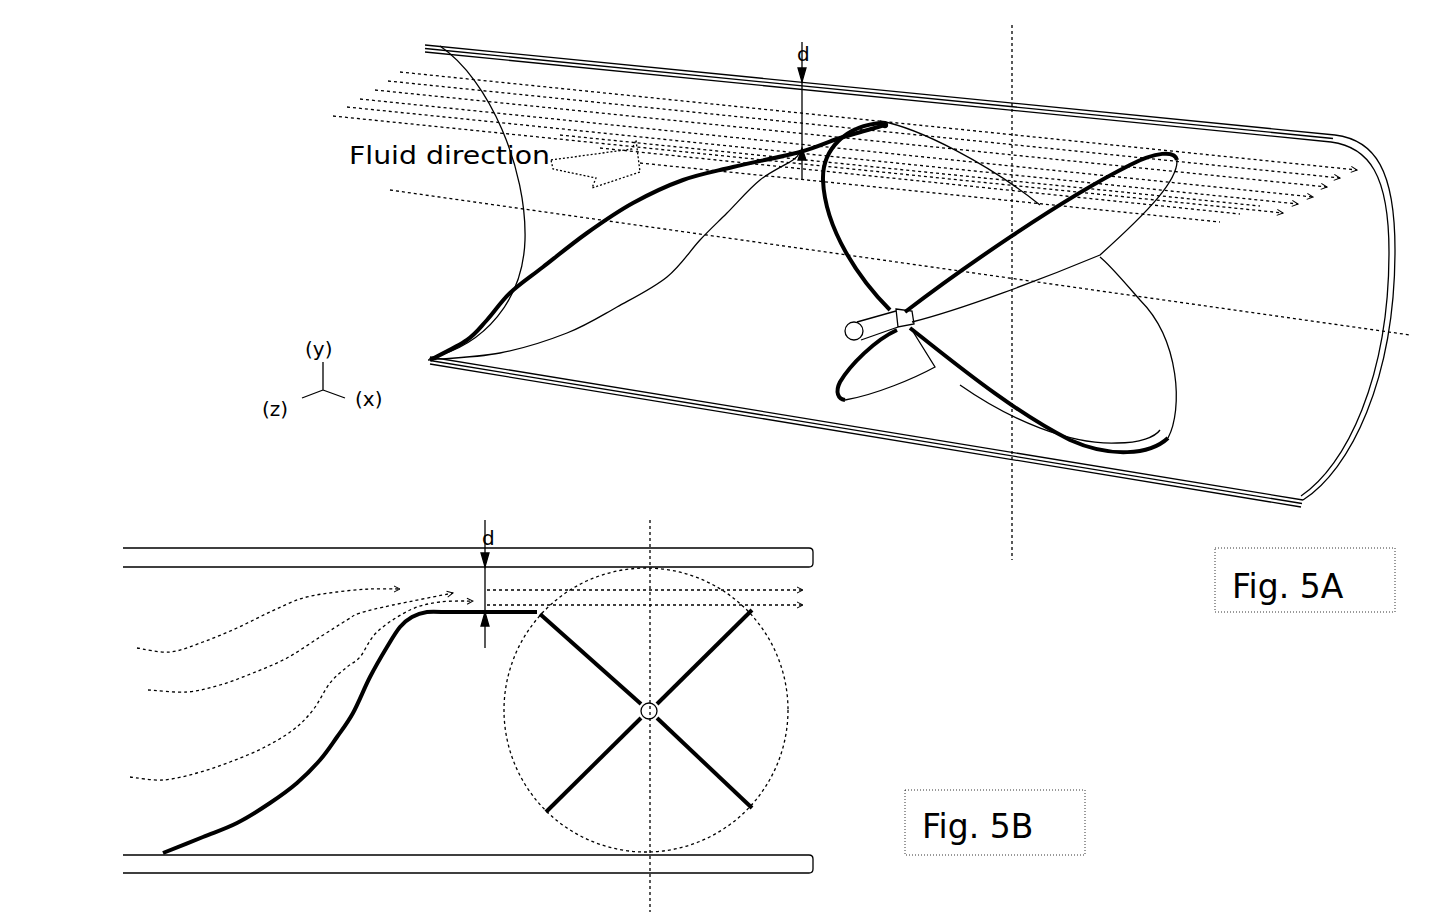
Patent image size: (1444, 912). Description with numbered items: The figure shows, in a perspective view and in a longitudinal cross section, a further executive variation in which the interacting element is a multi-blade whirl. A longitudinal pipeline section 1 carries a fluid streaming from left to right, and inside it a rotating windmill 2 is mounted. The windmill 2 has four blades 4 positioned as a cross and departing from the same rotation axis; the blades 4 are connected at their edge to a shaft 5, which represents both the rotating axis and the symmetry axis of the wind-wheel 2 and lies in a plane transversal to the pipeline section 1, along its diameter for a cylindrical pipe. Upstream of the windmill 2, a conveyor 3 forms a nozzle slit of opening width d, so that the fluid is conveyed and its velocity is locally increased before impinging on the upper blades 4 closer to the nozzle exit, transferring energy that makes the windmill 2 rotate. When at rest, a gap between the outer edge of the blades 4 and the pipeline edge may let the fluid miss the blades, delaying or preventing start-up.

In FIG. 5A, the pipeline section 1 is at (900, 292).
In FIG. 5B, the pipeline section 1 is at (468, 716).
In FIG. 5A, the windmill 2 is at (1011, 286).
In FIG. 5B, the windmill 2 is at (656, 710).
In FIG. 5A, the conveyor 3 is at (658, 242).
In FIG. 5B, the conveyor 3 is at (350, 732).
In FIG. 5A, the blades 4 is at (1000, 286).
In FIG. 5B, the blades 4 is at (644, 716).
In FIG. 5A, the shaft 5 is at (879, 324).
In FIG. 5B, the shaft 5 is at (649, 697).